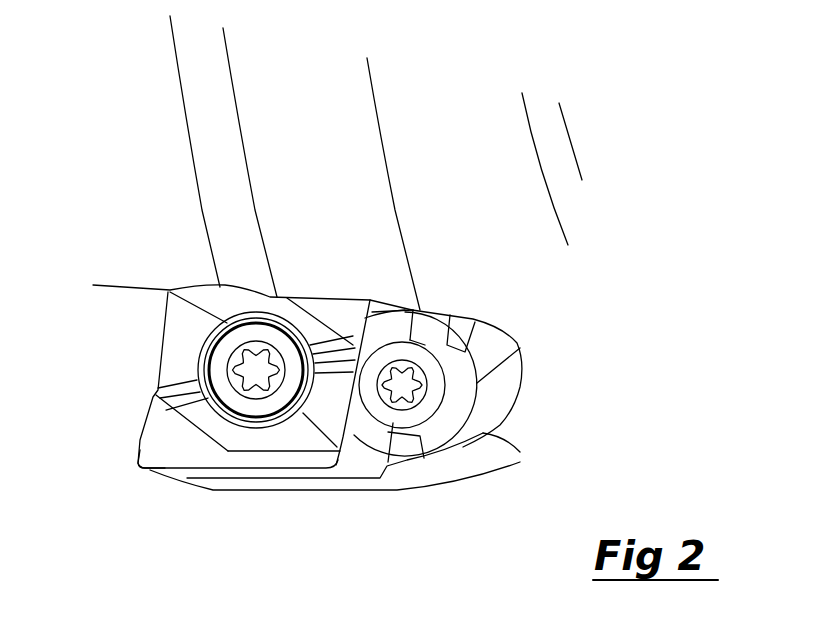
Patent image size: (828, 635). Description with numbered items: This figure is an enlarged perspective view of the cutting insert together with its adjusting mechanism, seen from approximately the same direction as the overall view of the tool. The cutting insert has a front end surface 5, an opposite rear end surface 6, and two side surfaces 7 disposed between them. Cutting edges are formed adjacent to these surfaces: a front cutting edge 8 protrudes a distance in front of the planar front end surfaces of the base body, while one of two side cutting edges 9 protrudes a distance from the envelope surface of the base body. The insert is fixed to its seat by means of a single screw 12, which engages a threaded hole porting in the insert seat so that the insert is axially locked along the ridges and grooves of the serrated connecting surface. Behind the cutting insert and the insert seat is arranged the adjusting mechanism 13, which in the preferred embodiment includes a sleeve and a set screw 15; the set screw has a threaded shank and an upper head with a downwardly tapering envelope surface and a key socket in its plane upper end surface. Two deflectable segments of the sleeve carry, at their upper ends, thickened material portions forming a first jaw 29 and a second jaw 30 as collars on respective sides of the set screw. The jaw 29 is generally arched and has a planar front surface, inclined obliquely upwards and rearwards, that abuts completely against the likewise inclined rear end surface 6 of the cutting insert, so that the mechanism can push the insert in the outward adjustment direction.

The front end surface 5 is at (152, 473).
The rear end surface 6 is at (335, 487).
The side surfaces 7 is at (315, 292).
The front cutting edge 8 is at (137, 443).
The side cutting edge 9 is at (177, 468).
The screw 12 is at (230, 345).
The adjusting mechanism 13 is at (455, 333).
The set screw 15 is at (397, 433).
The jaw 29 is at (383, 330).
The jaw 30 is at (447, 430).